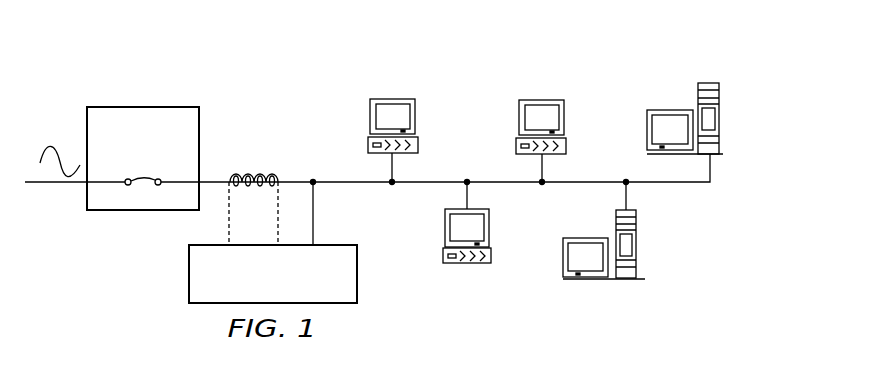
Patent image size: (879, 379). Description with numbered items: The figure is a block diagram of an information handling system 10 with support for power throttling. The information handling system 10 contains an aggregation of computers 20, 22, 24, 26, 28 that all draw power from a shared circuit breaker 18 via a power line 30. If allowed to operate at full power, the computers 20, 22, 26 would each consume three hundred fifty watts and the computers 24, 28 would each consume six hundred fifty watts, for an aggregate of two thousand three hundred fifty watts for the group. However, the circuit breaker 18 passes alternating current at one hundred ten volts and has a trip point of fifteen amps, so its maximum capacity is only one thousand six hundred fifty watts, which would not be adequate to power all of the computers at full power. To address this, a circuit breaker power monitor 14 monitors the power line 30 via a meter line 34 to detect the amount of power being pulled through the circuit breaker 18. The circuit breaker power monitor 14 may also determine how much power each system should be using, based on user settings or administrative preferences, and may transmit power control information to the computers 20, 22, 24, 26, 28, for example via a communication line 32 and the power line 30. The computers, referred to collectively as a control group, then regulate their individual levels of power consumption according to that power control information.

The information handling system 10 is at (224, 62).
The circuit breaker power monitor 14 is at (189, 274).
The circuit breaker 18 is at (147, 108).
The computer 20 is at (368, 147).
The computer 22 is at (567, 144).
The computer 24 is at (720, 117).
The computer 26 is at (442, 256).
The computer 28 is at (637, 247).
The power line 30 is at (437, 179).
The communication line 32 is at (313, 216).
The meter line 34 is at (229, 219).